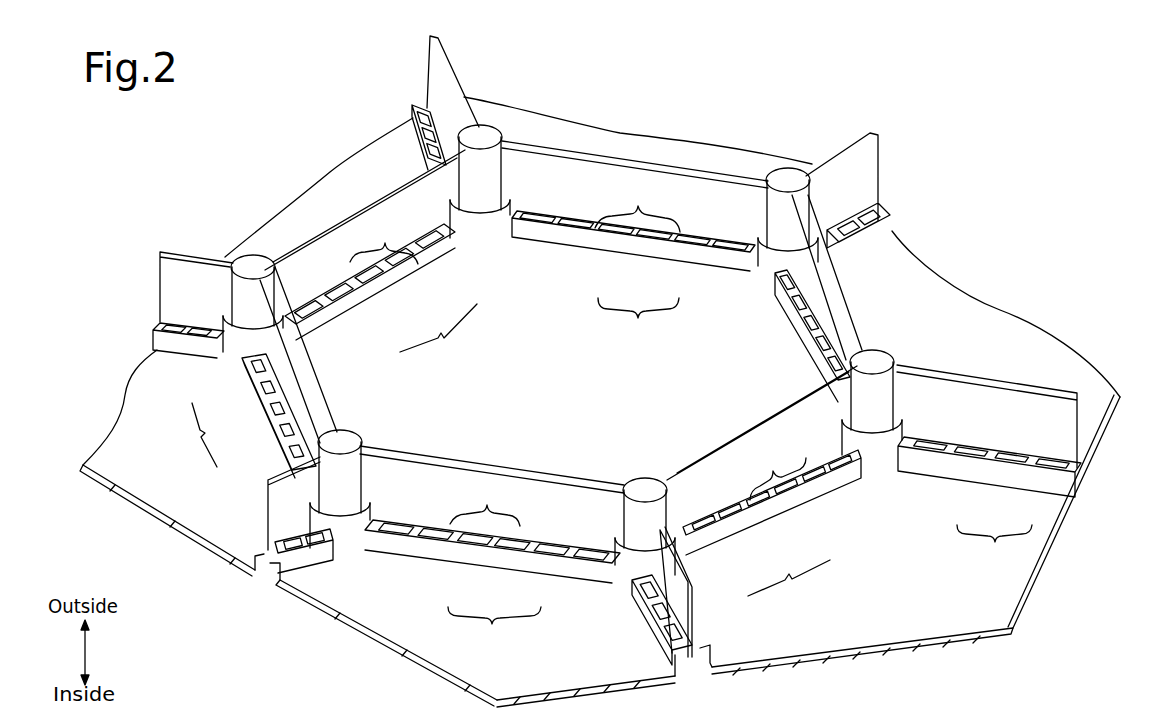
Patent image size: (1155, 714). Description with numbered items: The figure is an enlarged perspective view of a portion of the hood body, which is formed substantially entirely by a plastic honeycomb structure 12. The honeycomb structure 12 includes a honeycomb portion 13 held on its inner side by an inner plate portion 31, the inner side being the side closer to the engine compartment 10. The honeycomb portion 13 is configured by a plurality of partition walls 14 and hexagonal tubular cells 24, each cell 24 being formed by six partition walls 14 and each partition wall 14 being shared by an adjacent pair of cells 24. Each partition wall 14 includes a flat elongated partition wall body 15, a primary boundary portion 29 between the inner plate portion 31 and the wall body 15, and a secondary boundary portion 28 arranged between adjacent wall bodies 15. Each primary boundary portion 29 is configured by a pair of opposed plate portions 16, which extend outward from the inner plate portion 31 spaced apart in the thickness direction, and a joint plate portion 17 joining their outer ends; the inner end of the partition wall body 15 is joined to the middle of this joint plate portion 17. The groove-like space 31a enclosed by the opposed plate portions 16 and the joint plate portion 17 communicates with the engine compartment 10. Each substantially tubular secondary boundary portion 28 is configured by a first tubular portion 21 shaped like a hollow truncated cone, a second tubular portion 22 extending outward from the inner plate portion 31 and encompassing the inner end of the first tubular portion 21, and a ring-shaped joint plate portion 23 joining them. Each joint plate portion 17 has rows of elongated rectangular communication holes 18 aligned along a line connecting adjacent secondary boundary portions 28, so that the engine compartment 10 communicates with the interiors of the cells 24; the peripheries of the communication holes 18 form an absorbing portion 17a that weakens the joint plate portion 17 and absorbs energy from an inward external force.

The engine compartment 10 is at (946, 704).
The honeycomb structure 12 is at (618, 346).
The honeycomb portion 13 is at (618, 346).
The partition wall 14 is at (617, 385).
The partition wall body 15 is at (588, 160).
The opposed plate portion 16 is at (611, 262).
The joint plate portion 17 is at (663, 250).
The absorbing portion 17a is at (590, 228).
The communication hole 18 is at (578, 353).
The first tubular portion 21 is at (474, 177).
The second tubular portion 22 is at (492, 238).
The joint plate portion 23 is at (504, 196).
The cell 24 is at (571, 385).
The secondary boundary portion 28 is at (488, 130).
The primary boundary portion 29 is at (906, 485).
The inner plate portion 31 is at (1033, 560).
The groove-like space 31a is at (277, 572).